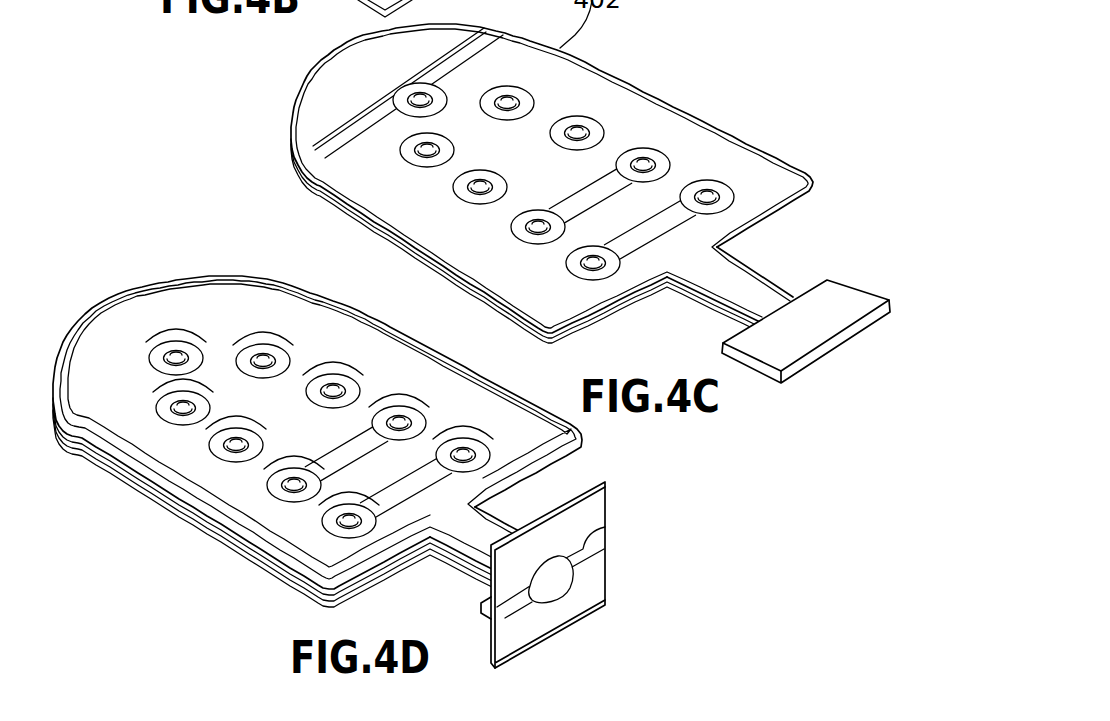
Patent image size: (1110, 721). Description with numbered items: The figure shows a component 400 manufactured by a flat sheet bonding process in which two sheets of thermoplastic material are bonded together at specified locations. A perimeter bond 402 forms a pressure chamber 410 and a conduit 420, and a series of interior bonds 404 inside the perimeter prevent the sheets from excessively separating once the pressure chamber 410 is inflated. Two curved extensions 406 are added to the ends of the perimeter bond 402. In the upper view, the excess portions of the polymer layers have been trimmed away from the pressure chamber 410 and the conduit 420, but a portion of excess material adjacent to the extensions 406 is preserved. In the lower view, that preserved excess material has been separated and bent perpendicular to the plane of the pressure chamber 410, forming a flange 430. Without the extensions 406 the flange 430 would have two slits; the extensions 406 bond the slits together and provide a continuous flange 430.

In FIG. 4C, the component 400 is at (748, 103).
In FIG. 4D, the component 400 is at (127, 272).
In FIG. 4C, the perimeter bond 402 is at (297, 106).
In FIG. 4D, the perimeter bond 402 is at (317, 441).
In FIG. 4C, the interior bonds 404 is at (598, 190).
In FIG. 4D, the interior bonds 404 is at (319, 433).
In FIG. 4C, the curved extensions 406 is at (827, 278).
In FIG. 4D, the curved extensions 406 is at (603, 528).
In FIG. 4C, the pressure chamber 410 is at (616, 91).
In FIG. 4D, the pressure chamber 410 is at (334, 325).
In FIG. 4C, the conduit 420 is at (780, 277).
In FIG. 4D, the conduit 420 is at (470, 568).
In FIG. 4D, the flange 430 is at (591, 583).